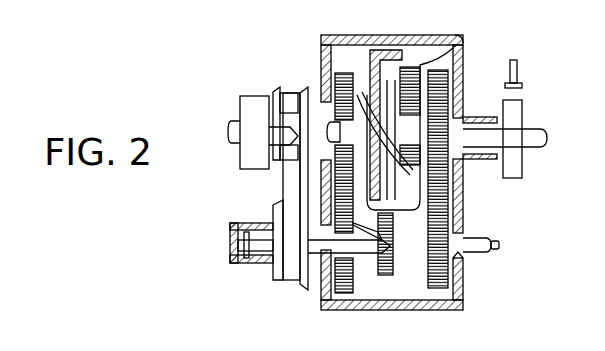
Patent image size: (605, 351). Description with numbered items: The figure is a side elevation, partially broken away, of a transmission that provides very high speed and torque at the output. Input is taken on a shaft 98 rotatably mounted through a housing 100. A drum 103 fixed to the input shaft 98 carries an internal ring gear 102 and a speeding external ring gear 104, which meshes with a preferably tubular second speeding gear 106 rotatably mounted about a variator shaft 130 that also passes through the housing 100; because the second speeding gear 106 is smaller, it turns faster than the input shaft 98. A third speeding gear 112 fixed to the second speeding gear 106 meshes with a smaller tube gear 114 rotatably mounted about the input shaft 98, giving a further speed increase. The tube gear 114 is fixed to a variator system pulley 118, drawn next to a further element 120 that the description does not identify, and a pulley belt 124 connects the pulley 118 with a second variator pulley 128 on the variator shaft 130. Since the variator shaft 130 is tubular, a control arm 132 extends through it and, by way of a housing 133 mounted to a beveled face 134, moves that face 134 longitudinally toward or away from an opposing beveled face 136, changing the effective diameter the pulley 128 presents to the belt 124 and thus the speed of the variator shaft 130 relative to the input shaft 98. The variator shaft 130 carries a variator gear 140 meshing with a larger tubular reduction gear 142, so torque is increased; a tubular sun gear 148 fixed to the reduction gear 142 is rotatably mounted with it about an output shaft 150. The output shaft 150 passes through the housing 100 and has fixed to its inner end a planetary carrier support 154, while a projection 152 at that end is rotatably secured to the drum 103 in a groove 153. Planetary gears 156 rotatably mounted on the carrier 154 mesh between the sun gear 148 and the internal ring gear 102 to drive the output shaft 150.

The input shaft 98 is at (232, 130).
The housing 100 is at (462, 34).
The internal ring gear 102 is at (430, 68).
The drum 103 is at (456, 40).
The speeding external ring gear 104 is at (395, 62).
The second speeding gear 106 is at (392, 263).
The third speeding gear 112 is at (355, 283).
The tube gear 114 is at (330, 76).
The variator system pulley 118 is at (290, 92).
The plate 120 is at (275, 170).
The pulley belt 124 is at (298, 192).
The second variator pulley 128 is at (283, 287).
The variator shaft 130 is at (472, 250).
The control arm 132 is at (496, 240).
The housing 133 is at (228, 228).
The beveled face 134 is at (280, 268).
The opposing beveled face 136 is at (302, 290).
The variator gear 140 is at (462, 290).
The tubular reduction gear 142 is at (455, 176).
The tubular sun gear 148 is at (440, 110).
The output shaft 150 is at (548, 138).
The projection 152 is at (330, 102).
The groove 153 is at (366, 100).
The planetary carrier support 154 is at (443, 105).
The planetary gears 156 is at (525, 83).